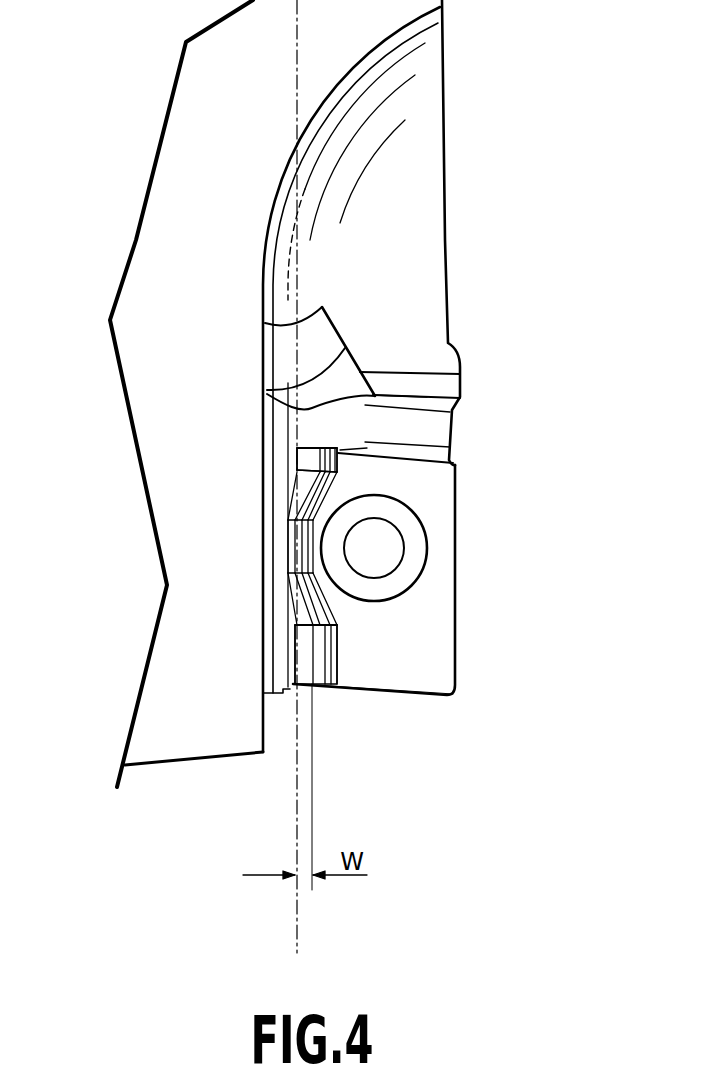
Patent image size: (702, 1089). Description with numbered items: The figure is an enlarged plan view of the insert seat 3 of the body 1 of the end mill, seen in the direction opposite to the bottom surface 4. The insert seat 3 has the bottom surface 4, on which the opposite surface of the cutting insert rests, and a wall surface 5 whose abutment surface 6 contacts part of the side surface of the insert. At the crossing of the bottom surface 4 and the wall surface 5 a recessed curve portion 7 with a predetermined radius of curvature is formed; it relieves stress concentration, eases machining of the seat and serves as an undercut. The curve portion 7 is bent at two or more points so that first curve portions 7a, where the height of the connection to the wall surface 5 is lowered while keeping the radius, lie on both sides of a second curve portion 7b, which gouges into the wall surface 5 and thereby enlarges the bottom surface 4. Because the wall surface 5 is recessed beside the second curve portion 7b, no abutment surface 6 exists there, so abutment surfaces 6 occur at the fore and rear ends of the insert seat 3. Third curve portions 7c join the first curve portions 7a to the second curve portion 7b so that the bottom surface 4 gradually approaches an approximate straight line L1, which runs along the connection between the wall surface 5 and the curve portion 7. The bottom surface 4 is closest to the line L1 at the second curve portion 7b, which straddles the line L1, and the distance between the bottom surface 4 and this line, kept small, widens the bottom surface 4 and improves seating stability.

The body 1 is at (333, 50).
The insert seat 3 is at (437, 573).
The bottom surface 4 is at (387, 637).
The wall surface 5 is at (427, 398).
The abutment surface 6 is at (288, 692).
The curve portion 7 is at (325, 678).
The first curve portion 7a is at (312, 456).
The second curve portion 7b is at (290, 547).
The third curve portion 7c is at (305, 485).
The approximate straight line L1 is at (293, 928).